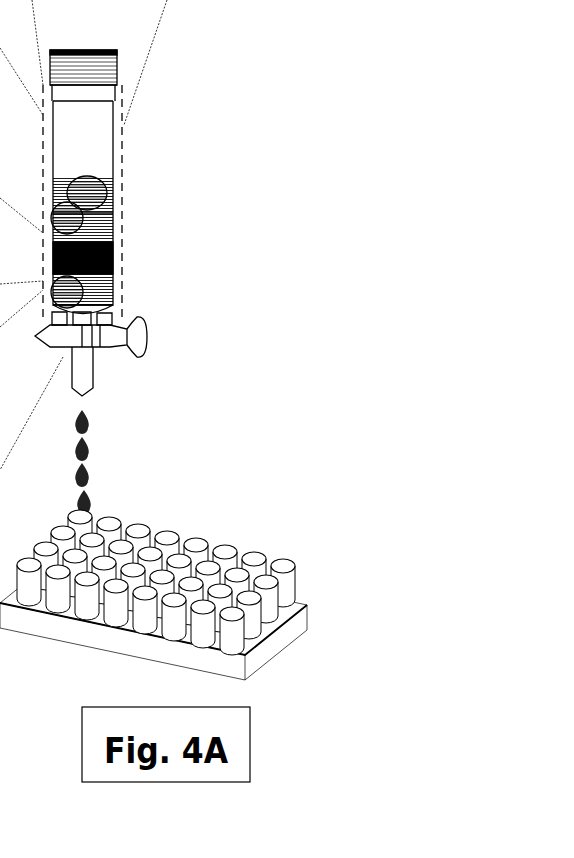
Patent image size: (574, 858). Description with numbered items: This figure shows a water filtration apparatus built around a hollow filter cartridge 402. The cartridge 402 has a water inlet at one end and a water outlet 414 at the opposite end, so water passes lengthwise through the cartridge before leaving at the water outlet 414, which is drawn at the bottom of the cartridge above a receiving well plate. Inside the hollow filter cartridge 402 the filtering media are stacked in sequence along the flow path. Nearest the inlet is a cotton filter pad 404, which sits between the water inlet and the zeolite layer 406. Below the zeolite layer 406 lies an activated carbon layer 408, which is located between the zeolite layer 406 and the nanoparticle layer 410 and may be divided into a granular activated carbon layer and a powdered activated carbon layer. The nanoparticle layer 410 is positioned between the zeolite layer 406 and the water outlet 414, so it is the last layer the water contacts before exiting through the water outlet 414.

The hollow filter cartridge 402 is at (122, 122).
The cotton filter pad 404 is at (97, 188).
The zeolite layer 406 is at (97, 223).
The activated carbon layer 408 is at (97, 257).
The nanoparticle layer 410 is at (97, 293).
The water outlet 414 is at (95, 368).